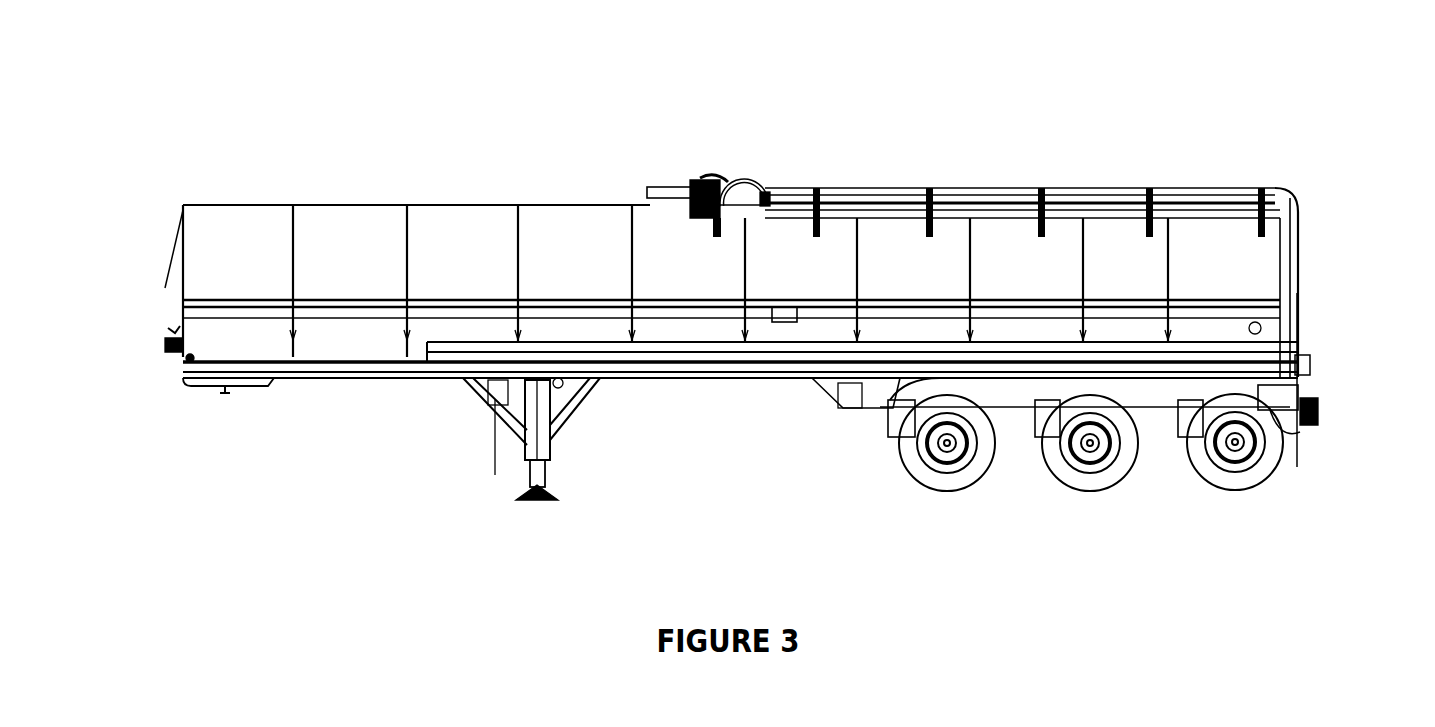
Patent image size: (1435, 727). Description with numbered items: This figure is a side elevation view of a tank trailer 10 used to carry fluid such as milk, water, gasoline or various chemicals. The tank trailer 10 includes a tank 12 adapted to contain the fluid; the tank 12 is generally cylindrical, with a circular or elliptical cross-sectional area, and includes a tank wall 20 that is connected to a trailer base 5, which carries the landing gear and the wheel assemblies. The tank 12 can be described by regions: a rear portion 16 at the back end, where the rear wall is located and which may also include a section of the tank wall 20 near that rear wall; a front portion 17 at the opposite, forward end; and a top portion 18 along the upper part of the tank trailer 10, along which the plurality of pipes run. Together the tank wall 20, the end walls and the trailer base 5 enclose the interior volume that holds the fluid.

The tank trailer 10 is at (945, 107).
The tank 12 is at (420, 205).
The top portion 18 is at (715, 150).
The tank wall 20 is at (327, 287).
The trailer base 5 is at (690, 378).
The rear portion 16 is at (1337, 313).
The front portion 17 is at (160, 312).